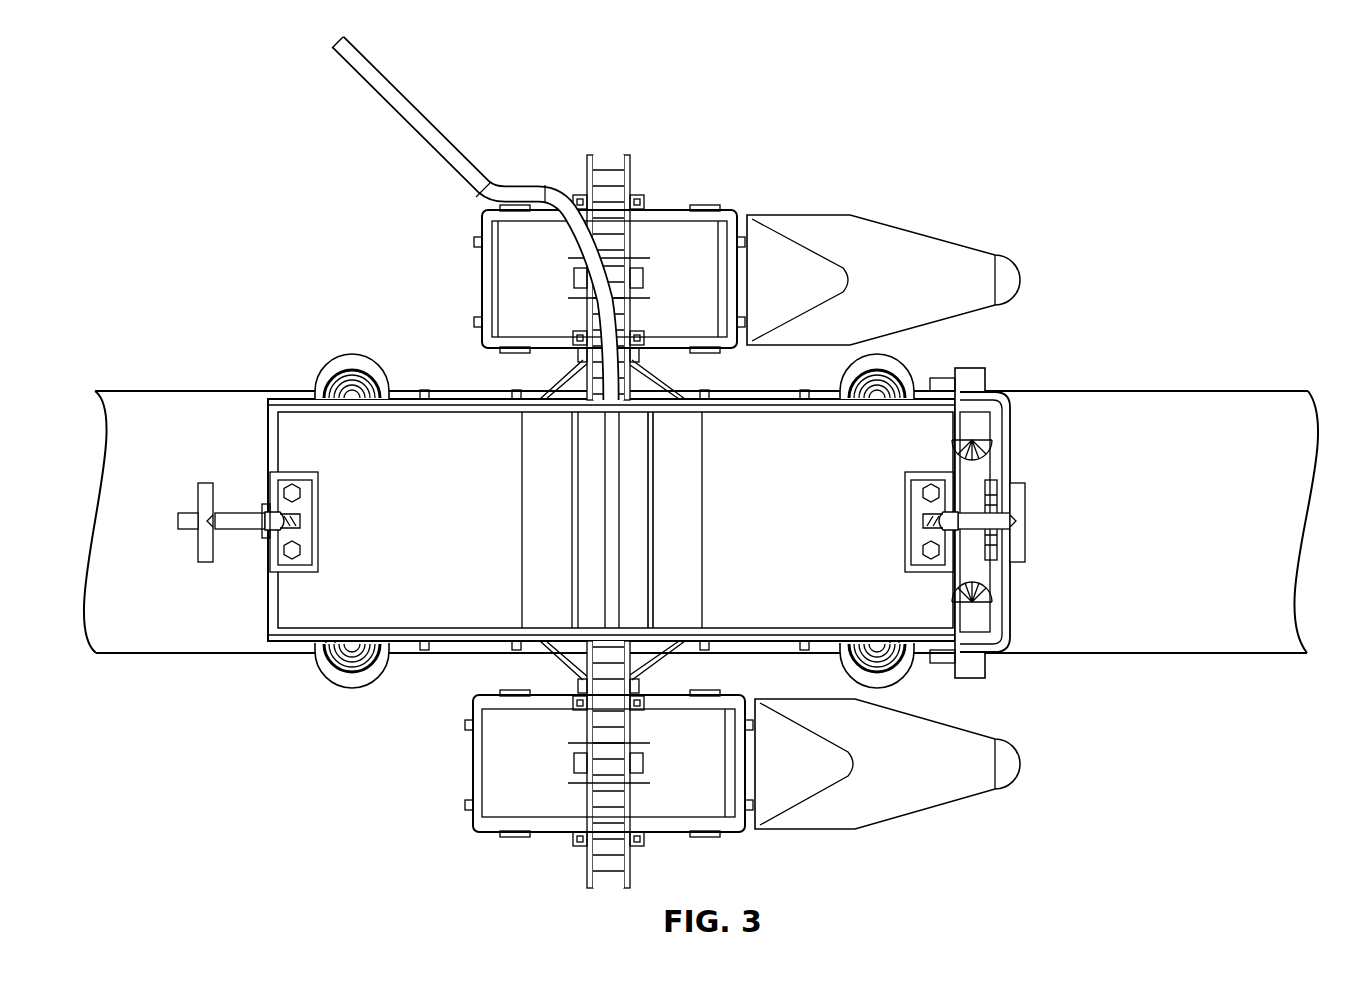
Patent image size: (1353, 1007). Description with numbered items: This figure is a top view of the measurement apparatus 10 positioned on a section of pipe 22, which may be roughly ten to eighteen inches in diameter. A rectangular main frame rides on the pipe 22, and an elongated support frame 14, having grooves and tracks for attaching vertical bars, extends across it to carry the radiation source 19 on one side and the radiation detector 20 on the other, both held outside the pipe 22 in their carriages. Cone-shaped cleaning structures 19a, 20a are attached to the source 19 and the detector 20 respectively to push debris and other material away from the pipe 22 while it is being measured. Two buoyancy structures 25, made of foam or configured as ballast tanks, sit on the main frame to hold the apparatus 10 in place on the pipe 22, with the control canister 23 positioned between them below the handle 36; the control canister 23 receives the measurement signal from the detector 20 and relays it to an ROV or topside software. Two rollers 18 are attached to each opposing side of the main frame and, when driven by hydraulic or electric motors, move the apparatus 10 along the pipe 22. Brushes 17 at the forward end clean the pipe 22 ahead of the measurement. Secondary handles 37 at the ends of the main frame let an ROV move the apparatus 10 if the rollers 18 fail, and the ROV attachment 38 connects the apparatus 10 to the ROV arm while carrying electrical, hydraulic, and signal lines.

The measurement apparatus 10 is at (895, 137).
The elongated support frame 14 is at (605, 168).
The brushes 17 is at (1012, 655).
The roller 18 is at (350, 365).
The radiation source 19 is at (672, 232).
The cleaning structure 19a is at (866, 242).
The radiation detector 20 is at (715, 795).
The cleaning structure 20a is at (960, 772).
The pipe 22 is at (1190, 391).
The control canister 23 is at (645, 605).
The buoyancy structure 25 is at (435, 418).
The handle 36 is at (610, 582).
The secondary handles 37 is at (196, 502).
The ROV attachment 38 is at (385, 84).